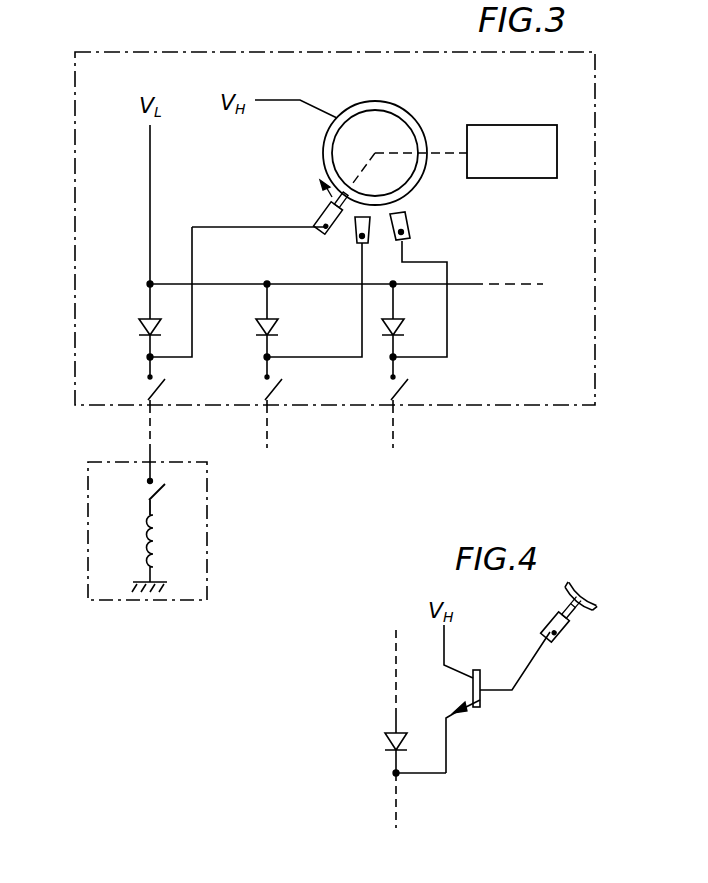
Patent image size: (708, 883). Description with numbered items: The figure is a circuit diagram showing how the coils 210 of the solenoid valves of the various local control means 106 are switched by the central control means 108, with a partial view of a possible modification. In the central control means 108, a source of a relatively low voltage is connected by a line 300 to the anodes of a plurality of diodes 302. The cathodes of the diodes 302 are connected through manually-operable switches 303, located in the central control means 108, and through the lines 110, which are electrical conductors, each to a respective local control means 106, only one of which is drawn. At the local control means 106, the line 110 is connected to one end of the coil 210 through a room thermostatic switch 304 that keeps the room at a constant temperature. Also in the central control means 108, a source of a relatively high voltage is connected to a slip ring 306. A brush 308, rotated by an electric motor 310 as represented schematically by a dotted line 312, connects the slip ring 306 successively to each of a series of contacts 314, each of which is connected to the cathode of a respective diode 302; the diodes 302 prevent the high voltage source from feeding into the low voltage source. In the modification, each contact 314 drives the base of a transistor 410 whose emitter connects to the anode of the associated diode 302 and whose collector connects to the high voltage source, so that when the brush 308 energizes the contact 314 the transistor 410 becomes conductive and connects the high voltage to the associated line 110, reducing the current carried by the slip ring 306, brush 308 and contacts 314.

In FIG. 3, the central control means 108 is at (596, 250).
In FIG. 3, the line 300 is at (152, 182).
In FIG. 3, the diode 302 is at (143, 328).
In FIG. 4, the diode 302 is at (388, 741).
In FIG. 3, the manually-operable switch 303 is at (143, 386).
In FIG. 3, the line 110 is at (140, 414).
In FIG. 3, the local control means 106 is at (208, 545).
In FIG. 3, the thermostatic switch 304 is at (147, 489).
In FIG. 3, the coil 210 is at (148, 538).
In FIG. 3, the slip ring 306 is at (374, 103).
In FIG. 4, the slip ring 306 is at (580, 595).
In FIG. 3, the brush 308 is at (338, 227).
In FIG. 4, the brush 308 is at (586, 621).
In FIG. 3, the electric motor 310 is at (505, 125).
In FIG. 3, the dotted line 312 is at (449, 153).
In FIG. 3, the contact 314 is at (316, 208).
In FIG. 4, the contact 314 is at (548, 622).
In FIG. 4, the transistor 410 is at (490, 703).